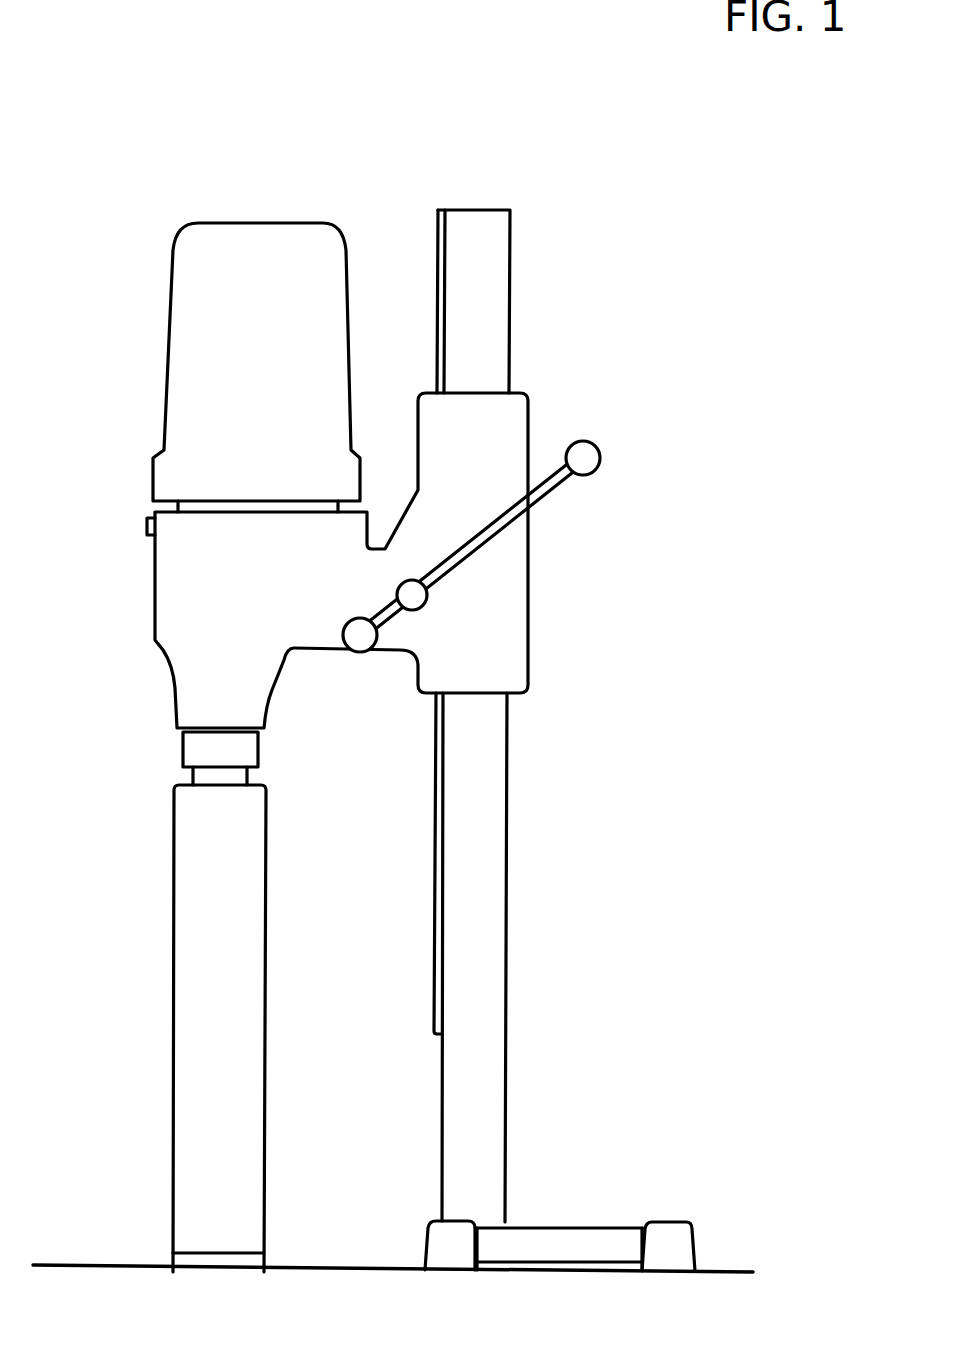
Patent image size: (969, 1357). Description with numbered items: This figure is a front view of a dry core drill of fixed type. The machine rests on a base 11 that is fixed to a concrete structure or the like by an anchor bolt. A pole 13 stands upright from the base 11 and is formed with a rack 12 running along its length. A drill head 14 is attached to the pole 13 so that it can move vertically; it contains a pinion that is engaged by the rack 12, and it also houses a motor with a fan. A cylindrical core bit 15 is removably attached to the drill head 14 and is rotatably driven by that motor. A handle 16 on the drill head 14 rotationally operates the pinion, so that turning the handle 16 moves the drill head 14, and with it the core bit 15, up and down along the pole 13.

The base 11 is at (587, 1240).
The rack 12 is at (435, 828).
The pole 13 is at (498, 913).
The drill head 14 is at (163, 568).
The core bit 15 is at (187, 993).
The handle 16 is at (530, 503).